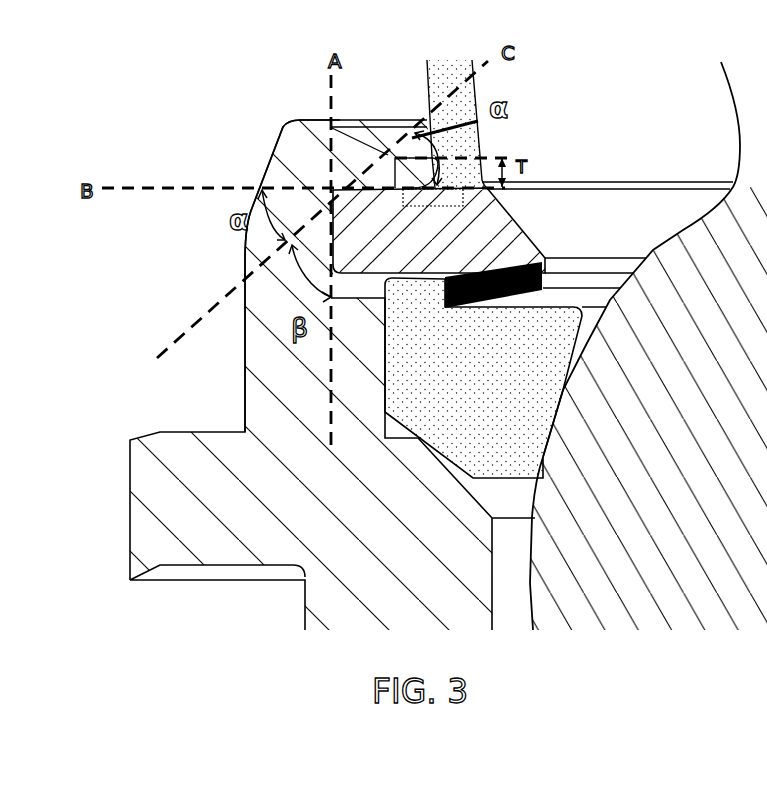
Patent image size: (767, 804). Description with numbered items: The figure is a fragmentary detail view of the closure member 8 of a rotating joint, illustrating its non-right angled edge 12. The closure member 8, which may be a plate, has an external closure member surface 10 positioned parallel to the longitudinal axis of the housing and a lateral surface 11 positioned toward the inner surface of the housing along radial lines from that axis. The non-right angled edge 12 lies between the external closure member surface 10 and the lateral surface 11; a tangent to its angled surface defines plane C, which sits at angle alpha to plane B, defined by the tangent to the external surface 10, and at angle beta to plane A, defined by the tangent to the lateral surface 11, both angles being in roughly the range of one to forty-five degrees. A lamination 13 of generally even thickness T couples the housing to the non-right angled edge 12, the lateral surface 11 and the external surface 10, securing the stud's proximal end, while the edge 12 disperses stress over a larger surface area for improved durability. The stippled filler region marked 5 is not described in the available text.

The elastomer filler body 5 is at (482, 394).
The closure member 8 is at (416, 254).
The external closure member surface 10 is at (381, 187).
The lateral surface 11 is at (331, 238).
The non-right angled edge 12 is at (338, 196).
The lamination 13 is at (357, 165).